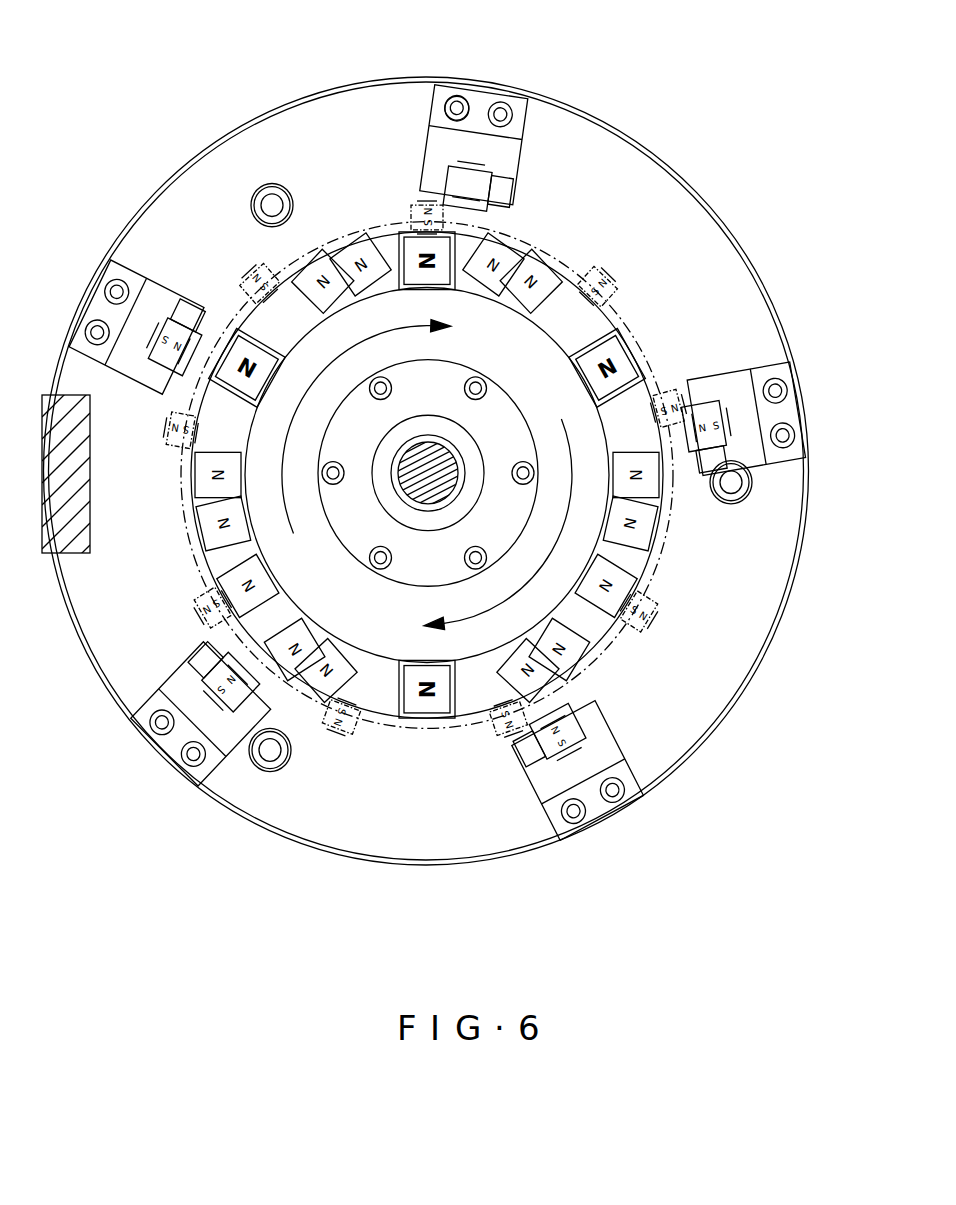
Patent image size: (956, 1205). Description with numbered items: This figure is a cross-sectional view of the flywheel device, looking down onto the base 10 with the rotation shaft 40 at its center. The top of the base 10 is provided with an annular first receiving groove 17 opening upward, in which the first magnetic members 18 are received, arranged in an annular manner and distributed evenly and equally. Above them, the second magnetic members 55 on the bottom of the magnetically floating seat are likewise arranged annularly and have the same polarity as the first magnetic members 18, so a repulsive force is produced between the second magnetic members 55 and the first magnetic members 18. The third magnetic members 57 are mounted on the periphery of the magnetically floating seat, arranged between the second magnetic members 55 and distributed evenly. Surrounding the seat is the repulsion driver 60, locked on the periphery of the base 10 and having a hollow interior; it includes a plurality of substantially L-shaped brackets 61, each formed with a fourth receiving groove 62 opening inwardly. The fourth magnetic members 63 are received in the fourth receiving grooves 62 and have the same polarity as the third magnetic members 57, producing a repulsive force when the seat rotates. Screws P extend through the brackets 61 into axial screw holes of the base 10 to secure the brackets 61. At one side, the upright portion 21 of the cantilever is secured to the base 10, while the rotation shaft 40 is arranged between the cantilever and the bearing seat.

The base 10 is at (683, 218).
The first receiving groove 17 is at (467, 718).
The first magnetic members 18 is at (347, 653).
The upright portion 21 is at (78, 477).
The rotation shaft 40 is at (443, 463).
The second magnetic members 55 is at (312, 594).
The third magnetic members 57 is at (422, 201).
The repulsion driver 60 is at (437, 420).
The brackets 61 is at (448, 150).
The fourth receiving grooves 62 is at (482, 167).
The fourth magnetic members 63 is at (512, 182).
The screws P is at (457, 95).